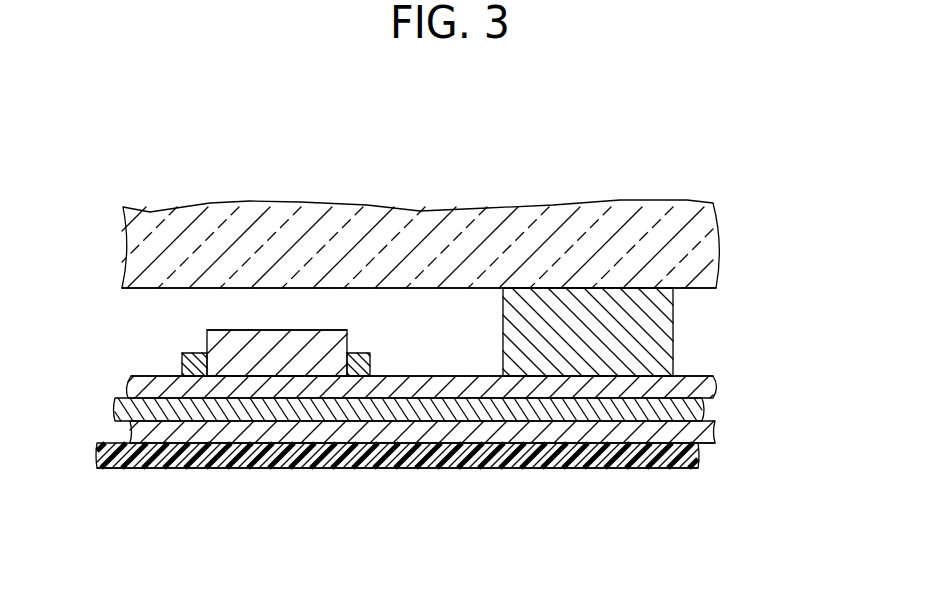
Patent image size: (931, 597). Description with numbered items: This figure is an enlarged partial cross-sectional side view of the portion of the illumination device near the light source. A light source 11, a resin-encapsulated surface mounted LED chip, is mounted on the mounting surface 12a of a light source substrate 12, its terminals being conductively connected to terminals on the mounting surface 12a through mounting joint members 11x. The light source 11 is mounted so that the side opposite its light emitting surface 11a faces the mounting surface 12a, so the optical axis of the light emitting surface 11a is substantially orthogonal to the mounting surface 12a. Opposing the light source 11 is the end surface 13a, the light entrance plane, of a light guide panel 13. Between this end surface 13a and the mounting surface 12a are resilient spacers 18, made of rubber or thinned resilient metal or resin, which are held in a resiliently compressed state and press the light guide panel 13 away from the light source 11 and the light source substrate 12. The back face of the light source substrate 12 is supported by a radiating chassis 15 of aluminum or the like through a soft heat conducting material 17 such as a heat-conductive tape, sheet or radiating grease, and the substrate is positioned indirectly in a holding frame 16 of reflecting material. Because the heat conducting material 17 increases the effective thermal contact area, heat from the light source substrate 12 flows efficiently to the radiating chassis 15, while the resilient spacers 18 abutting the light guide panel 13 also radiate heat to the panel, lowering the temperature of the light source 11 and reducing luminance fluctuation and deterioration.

The light source 11 is at (215, 340).
The light emitting surface 11a is at (285, 330).
The mounting joint member 11x is at (371, 356).
The light source substrate 12 is at (714, 382).
The mounting surface 12a is at (688, 376).
The light guide panel 13 is at (427, 220).
The end surface (light entrance plane) 13a is at (203, 288).
The radiating chassis 15 is at (655, 438).
The holding frame 16 is at (303, 468).
The heat conducting material 17 is at (703, 412).
The resilient spacer 18 is at (673, 310).